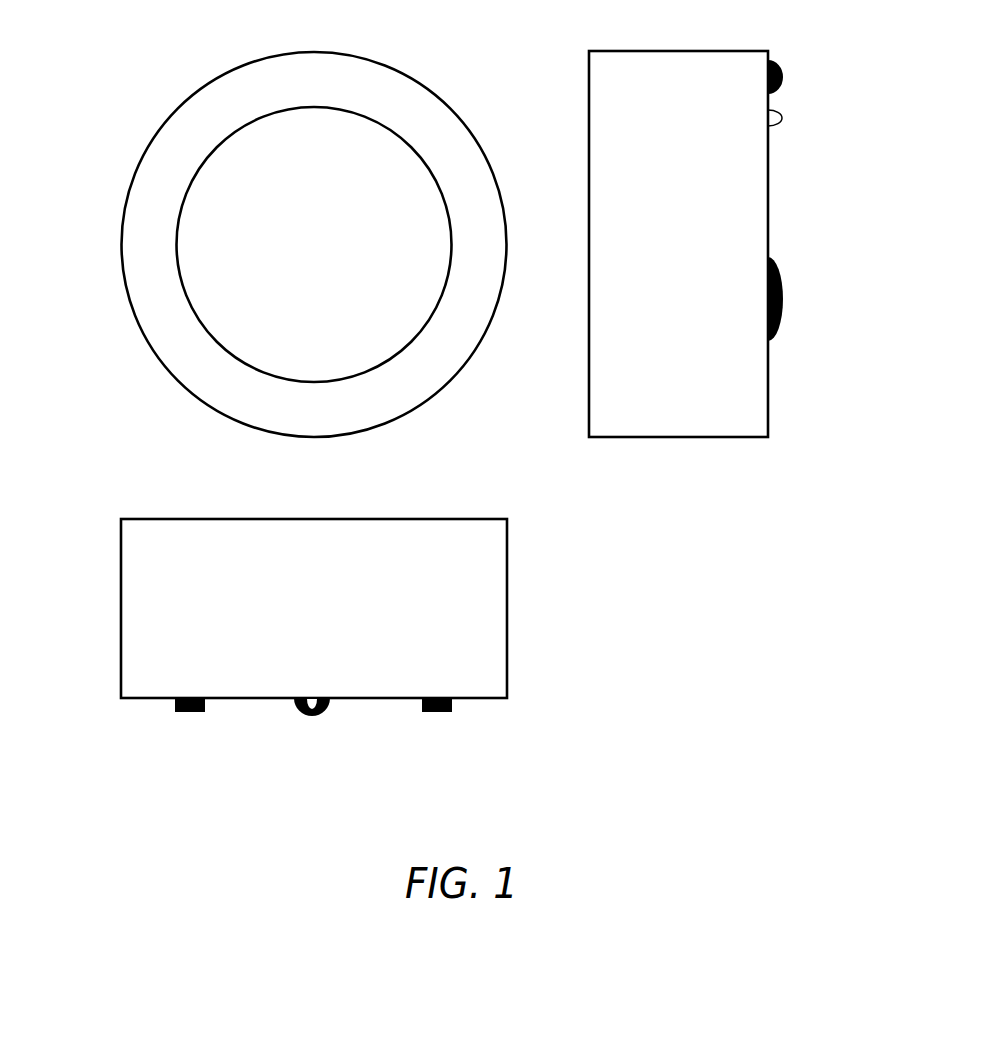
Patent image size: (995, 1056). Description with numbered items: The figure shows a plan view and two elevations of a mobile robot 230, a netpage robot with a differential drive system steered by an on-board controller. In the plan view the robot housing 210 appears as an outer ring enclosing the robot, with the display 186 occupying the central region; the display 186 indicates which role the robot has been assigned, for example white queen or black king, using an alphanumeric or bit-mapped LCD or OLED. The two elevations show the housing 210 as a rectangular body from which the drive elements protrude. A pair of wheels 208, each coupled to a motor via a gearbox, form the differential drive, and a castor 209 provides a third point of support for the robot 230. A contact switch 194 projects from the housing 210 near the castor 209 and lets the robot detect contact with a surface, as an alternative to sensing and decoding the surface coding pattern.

The mobile robot 230 is at (154, 46).
The robot housing 210 is at (444, 374).
The display 186 is at (314, 244).
The castor 209 is at (783, 74).
The contact switch 194 is at (783, 118).
The wheel 208 is at (783, 296).